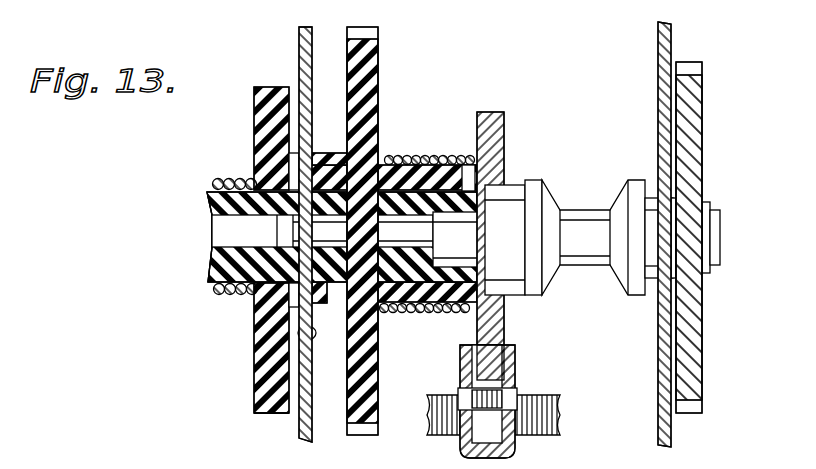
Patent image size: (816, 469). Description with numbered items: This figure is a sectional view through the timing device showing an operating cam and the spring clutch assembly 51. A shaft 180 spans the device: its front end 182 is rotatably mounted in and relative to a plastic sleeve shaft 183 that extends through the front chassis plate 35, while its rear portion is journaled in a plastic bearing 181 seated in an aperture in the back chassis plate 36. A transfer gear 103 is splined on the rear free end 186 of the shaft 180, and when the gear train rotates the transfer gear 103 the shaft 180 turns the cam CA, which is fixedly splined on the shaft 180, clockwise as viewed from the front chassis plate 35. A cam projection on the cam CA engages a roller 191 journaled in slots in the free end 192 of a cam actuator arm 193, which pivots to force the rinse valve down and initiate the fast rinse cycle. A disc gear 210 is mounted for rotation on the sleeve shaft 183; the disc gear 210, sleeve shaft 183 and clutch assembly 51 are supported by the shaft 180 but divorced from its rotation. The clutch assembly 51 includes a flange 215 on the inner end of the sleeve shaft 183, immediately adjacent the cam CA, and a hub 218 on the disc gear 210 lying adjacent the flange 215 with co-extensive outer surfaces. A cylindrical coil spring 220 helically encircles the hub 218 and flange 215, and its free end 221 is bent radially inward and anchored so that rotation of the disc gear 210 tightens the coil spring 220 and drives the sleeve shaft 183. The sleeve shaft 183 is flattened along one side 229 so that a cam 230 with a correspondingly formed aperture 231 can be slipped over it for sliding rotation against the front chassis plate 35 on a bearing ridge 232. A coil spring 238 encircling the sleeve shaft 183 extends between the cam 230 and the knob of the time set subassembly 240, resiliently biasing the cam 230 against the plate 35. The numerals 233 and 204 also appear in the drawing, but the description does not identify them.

The front chassis plate 35 is at (299, 52).
The disc gear 210 is at (378, 44).
The spring clutch assembly 51 is at (422, 102).
The cam CA is at (500, 112).
The back chassis plate 36 is at (671, 45).
The transfer gear 103 is at (702, 322).
The aperture 231 is at (256, 160).
The flattened side 229 is at (213, 183).
The cylindrical coil spring 220 is at (455, 165).
The free end of the coil spring 221 is at (513, 215).
The shaft 180 is at (653, 227).
The rear free end of the shaft 186 is at (720, 232).
The front end of the shaft 182 is at (300, 238).
The time set subassembly 240 is at (200, 255).
The sleeve shaft 183 is at (222, 262).
The coil spring 238 is at (238, 296).
The cam 230 is at (298, 333).
The bearing ridge 232 is at (254, 364).
The housing end 233 is at (268, 413).
The flange 215 is at (470, 296).
The hub 218 is at (405, 310).
The plastic bearing 181 is at (640, 300).
The roller 191 is at (495, 372).
The cam actuator arm 193 is at (560, 420).
The free end of the cam actuator arm 192 is at (490, 455).
The base 204 is at (252, 464).